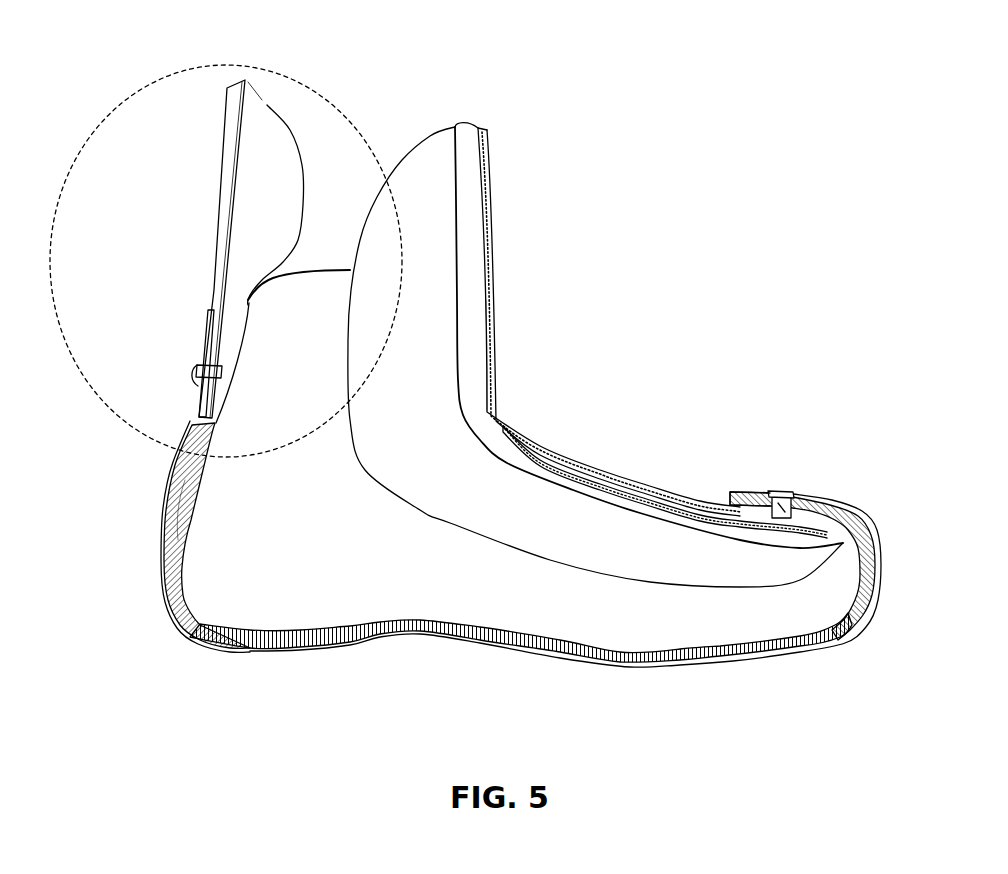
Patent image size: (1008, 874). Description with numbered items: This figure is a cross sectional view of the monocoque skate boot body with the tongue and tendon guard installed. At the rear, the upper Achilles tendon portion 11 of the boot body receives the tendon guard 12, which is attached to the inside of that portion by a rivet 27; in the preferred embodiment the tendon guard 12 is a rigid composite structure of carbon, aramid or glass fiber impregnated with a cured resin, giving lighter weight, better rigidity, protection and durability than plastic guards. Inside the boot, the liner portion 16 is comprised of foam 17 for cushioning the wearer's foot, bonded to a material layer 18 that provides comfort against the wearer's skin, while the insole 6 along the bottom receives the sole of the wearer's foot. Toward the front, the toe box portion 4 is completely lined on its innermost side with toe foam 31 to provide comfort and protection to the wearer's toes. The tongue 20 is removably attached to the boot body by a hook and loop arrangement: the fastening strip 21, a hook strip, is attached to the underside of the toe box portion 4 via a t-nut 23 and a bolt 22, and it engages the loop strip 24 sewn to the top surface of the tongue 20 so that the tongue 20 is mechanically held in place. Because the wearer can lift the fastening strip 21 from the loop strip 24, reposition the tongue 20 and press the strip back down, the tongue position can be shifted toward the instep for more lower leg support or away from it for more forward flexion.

The toe box portion 4 is at (877, 533).
The insole 6 is at (378, 623).
The upper Achilles tendon portion 11 is at (196, 390).
The tendon guard 12 is at (225, 222).
The liner portion 16 is at (192, 516).
The foam 17 is at (187, 489).
The material layer 18 is at (175, 545).
The tongue 20 is at (477, 258).
The fastening strip 21 is at (547, 443).
The bolt 22 is at (787, 492).
The t-nut 23 is at (768, 492).
The loop strip 24 is at (490, 358).
The rivet 27 is at (200, 363).
The toe foam 31 is at (862, 533).